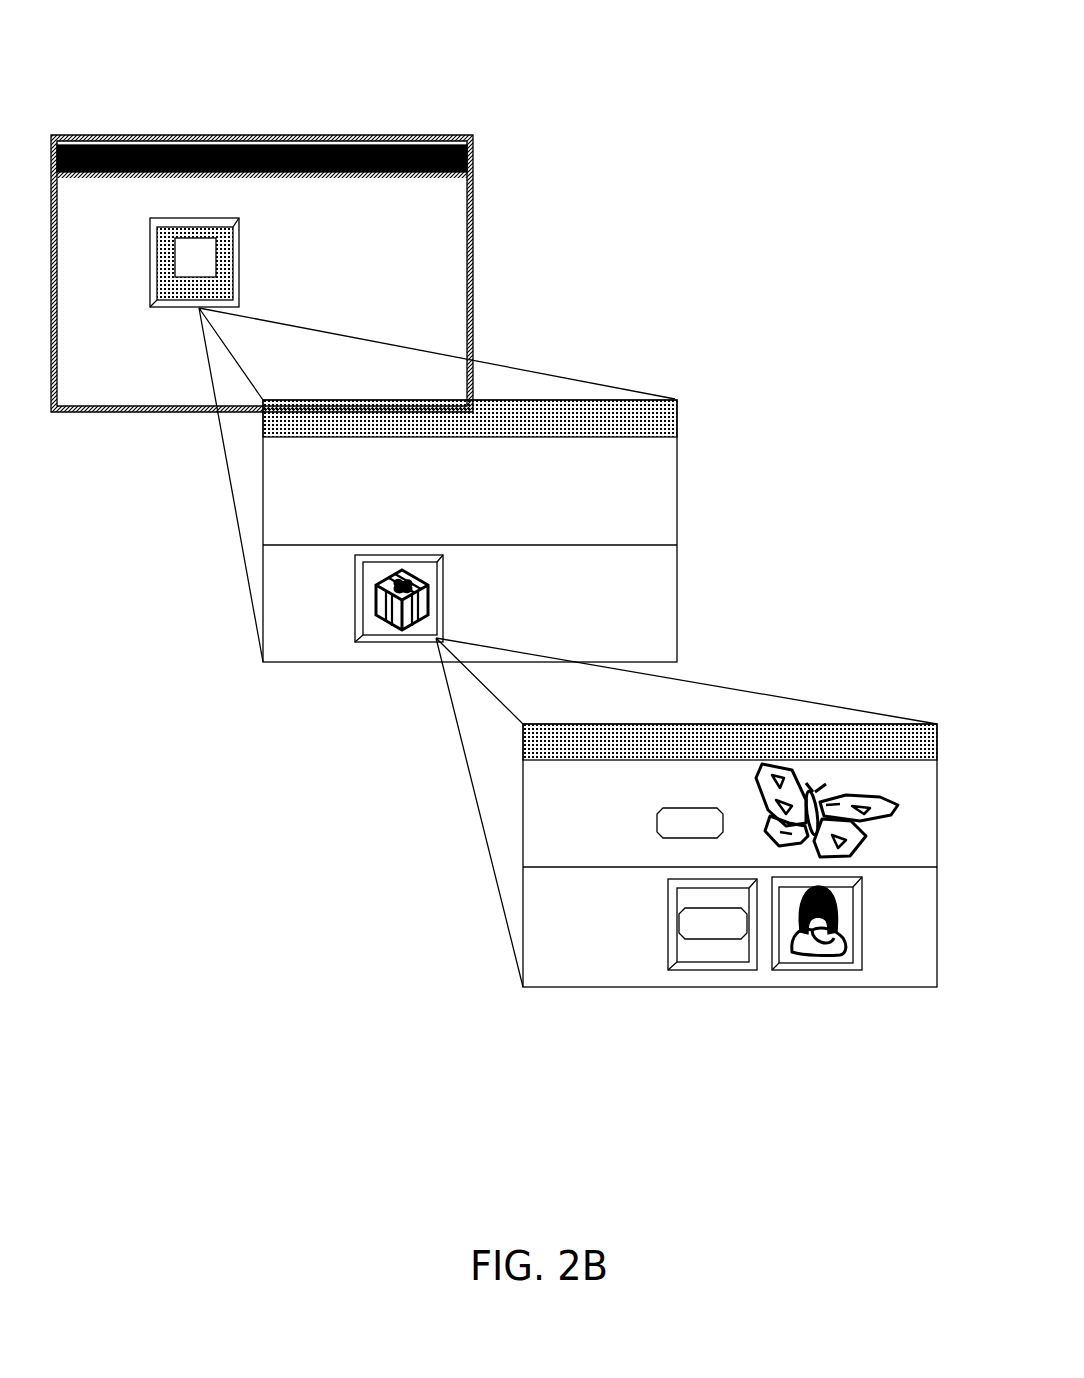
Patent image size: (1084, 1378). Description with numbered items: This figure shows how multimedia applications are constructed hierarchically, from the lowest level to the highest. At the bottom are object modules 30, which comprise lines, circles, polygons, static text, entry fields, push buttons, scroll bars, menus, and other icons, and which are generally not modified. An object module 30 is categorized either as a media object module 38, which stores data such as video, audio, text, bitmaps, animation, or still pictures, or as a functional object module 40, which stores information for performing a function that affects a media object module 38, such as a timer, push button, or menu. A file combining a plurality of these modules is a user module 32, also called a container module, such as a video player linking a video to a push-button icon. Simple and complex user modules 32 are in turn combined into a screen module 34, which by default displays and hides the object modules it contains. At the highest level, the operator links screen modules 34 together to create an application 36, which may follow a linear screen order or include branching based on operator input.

The object module 30 is at (613, 977).
The user module 32 is at (613, 864).
The screen module 34 is at (647, 398).
The application 36 is at (373, 133).
The media object module 38 is at (825, 975).
The functional object module 40 is at (692, 975).